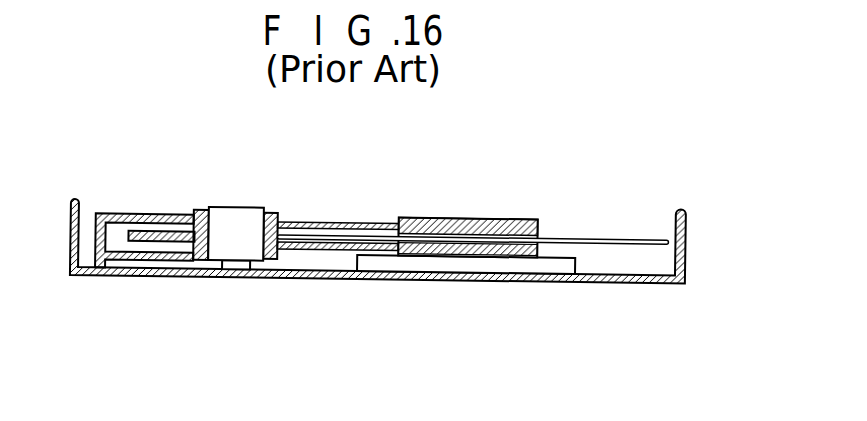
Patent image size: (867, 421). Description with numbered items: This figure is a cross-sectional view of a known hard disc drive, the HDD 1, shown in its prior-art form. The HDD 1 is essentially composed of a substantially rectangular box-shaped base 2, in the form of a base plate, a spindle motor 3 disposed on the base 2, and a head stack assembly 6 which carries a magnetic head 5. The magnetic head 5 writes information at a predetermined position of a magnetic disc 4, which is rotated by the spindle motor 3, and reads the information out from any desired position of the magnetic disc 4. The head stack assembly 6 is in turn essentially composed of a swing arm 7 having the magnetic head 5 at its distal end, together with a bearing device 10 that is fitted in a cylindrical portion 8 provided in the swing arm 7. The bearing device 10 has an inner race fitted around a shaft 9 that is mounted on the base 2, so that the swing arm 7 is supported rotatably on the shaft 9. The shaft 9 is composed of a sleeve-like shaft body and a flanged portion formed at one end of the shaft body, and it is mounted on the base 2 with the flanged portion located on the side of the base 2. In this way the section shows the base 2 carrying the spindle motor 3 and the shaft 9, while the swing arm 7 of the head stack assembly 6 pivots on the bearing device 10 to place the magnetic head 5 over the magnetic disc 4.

The hard disc drive 1 is at (698, 163).
The base 2 is at (648, 283).
The spindle motor 3 is at (518, 220).
The magnetic disc 4 is at (620, 238).
The magnetic head 5 is at (477, 220).
The head stack assembly 6 is at (320, 200).
The swing arm 7 is at (347, 222).
The cylindrical portion 8 is at (205, 214).
The shaft 9 is at (240, 273).
The bearing device 10 is at (238, 222).